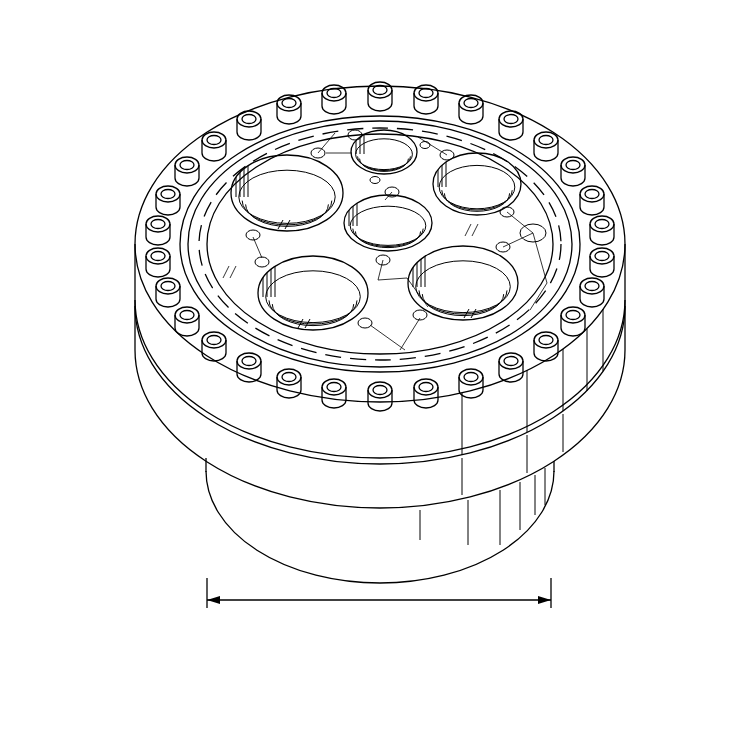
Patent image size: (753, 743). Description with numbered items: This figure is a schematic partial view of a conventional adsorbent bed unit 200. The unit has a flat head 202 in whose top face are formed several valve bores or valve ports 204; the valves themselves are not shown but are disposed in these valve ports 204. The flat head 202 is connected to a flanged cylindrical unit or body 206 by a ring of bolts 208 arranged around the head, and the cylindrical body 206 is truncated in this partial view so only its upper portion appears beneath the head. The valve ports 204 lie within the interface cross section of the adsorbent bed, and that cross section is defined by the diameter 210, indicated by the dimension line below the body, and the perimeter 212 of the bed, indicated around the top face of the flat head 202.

The adsorbent bed unit 200 is at (119, 72).
The flat head 202 is at (148, 325).
The valve ports 204 is at (315, 285).
The flanged cylindrical unit 206 is at (238, 513).
The bolts 208 is at (187, 160).
The diameter 210 is at (458, 603).
The perimeter 212 is at (252, 166).